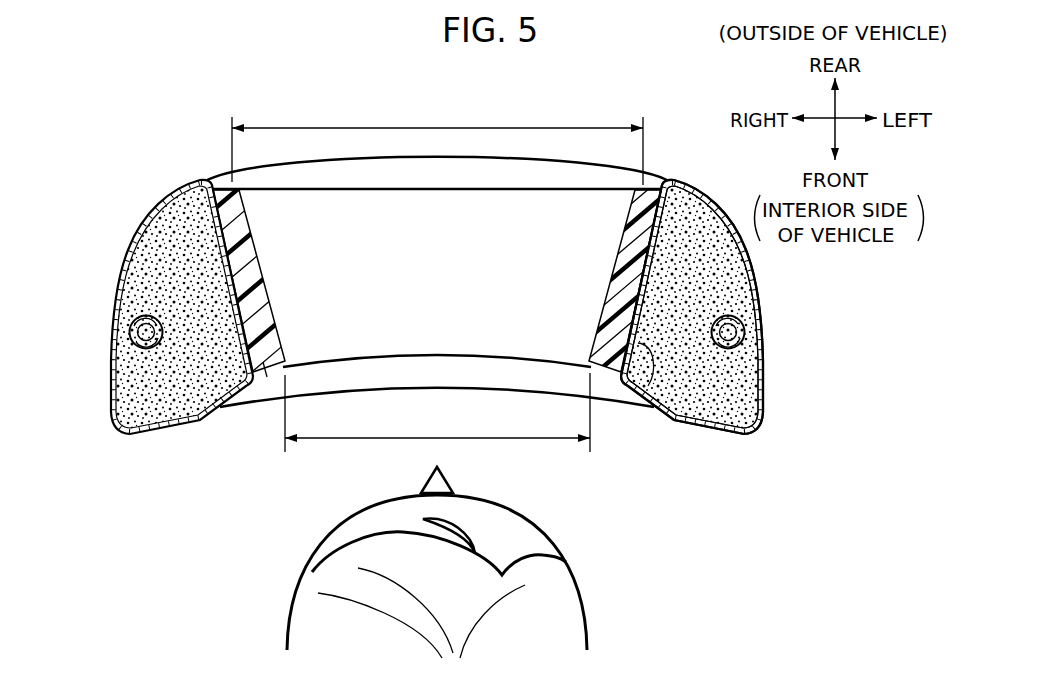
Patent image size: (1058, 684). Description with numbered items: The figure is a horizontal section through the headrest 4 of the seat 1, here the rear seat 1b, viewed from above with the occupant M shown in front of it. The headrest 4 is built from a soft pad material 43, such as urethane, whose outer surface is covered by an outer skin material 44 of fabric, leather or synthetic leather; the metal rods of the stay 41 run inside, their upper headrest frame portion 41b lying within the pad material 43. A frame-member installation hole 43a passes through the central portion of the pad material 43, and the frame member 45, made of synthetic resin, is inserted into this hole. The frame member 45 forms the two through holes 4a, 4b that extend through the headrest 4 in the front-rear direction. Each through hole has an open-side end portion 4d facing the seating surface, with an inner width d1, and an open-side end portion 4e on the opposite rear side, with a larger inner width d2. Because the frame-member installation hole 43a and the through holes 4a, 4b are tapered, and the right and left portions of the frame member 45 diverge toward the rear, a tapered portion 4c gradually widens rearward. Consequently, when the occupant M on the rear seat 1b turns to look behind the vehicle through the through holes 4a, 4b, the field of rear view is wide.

The seat 1 is at (398, 228).
The rear seat 1b is at (205, 148).
The headrest 4 is at (417, 287).
The through hole 4a is at (468, 283).
The through hole 4b is at (437, 278).
The tapered portion 4c is at (258, 267).
The open-side end portion 4d is at (290, 353).
The open-side end portion 4e is at (243, 200).
The stay 41 is at (797, 334).
The headrest frame portion 41b is at (750, 328).
The pad material 43 is at (749, 321).
The frame-member installation hole 43a is at (632, 380).
The outer skin material 44 is at (763, 370).
The frame member 45 is at (267, 377).
The inner width d1 is at (437, 412).
The inner width d2 is at (437, 144).
The occupant M is at (583, 592).